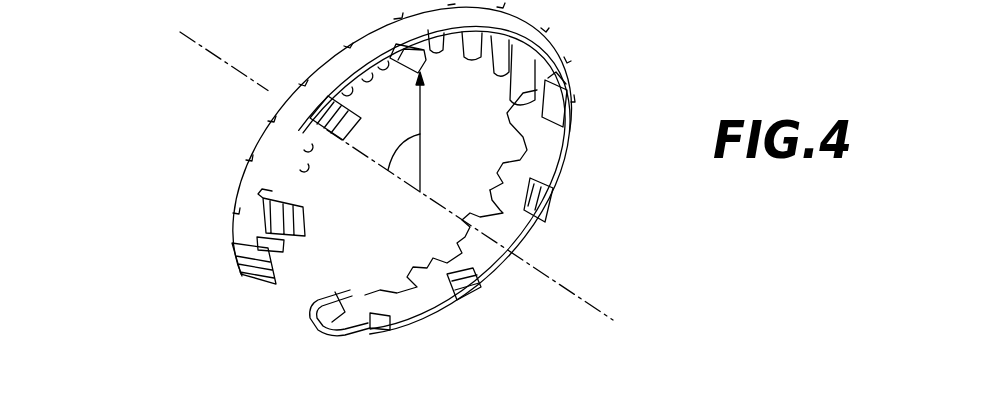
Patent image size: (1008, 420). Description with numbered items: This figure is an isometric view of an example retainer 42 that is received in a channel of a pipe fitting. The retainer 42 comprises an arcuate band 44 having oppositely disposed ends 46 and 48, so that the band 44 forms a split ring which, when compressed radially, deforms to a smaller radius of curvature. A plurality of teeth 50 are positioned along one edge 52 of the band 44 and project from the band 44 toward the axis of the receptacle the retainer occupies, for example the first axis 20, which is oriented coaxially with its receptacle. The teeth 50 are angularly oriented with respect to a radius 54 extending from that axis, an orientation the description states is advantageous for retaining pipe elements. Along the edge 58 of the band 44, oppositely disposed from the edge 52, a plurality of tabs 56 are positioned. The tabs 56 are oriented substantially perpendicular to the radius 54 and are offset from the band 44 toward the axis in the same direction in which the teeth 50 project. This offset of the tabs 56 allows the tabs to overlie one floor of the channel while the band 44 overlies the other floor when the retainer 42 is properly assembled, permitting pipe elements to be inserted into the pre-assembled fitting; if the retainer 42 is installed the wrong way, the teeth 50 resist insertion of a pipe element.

The first axis 20 is at (253, 80).
The retainer 42 is at (550, 137).
The arcuate band 44 is at (502, 230).
The end 46 is at (320, 332).
The end 48 is at (263, 290).
The teeth 50 is at (423, 257).
The edge 52 is at (503, 153).
The radius 54 is at (386, 171).
The tabs 56 is at (467, 283).
The edge 58 is at (553, 170).